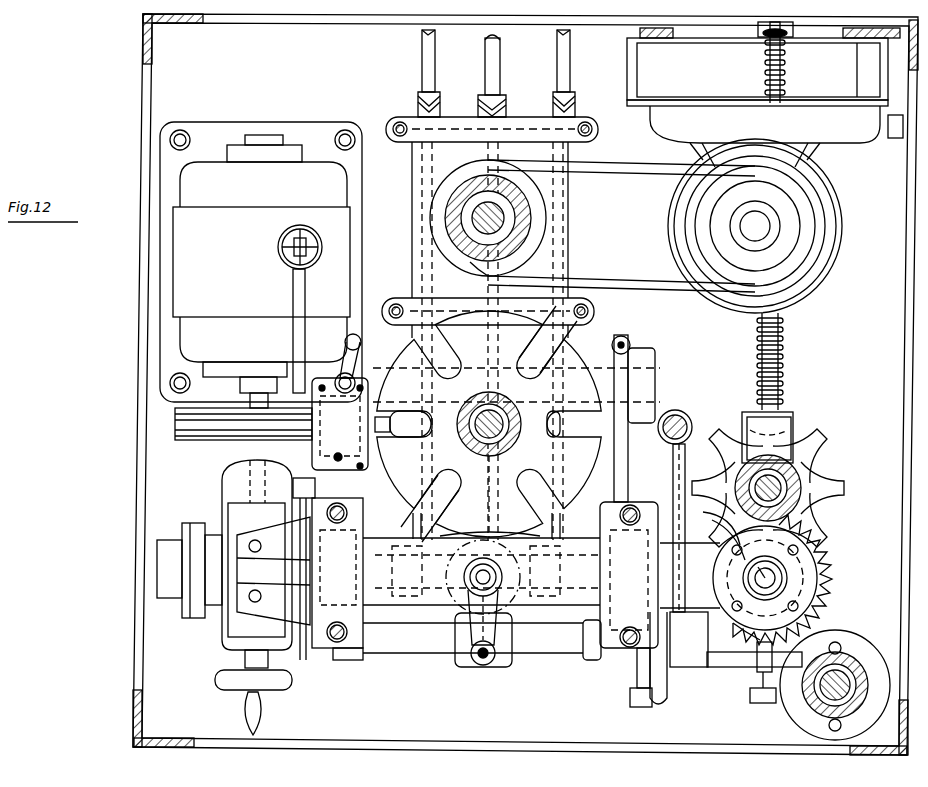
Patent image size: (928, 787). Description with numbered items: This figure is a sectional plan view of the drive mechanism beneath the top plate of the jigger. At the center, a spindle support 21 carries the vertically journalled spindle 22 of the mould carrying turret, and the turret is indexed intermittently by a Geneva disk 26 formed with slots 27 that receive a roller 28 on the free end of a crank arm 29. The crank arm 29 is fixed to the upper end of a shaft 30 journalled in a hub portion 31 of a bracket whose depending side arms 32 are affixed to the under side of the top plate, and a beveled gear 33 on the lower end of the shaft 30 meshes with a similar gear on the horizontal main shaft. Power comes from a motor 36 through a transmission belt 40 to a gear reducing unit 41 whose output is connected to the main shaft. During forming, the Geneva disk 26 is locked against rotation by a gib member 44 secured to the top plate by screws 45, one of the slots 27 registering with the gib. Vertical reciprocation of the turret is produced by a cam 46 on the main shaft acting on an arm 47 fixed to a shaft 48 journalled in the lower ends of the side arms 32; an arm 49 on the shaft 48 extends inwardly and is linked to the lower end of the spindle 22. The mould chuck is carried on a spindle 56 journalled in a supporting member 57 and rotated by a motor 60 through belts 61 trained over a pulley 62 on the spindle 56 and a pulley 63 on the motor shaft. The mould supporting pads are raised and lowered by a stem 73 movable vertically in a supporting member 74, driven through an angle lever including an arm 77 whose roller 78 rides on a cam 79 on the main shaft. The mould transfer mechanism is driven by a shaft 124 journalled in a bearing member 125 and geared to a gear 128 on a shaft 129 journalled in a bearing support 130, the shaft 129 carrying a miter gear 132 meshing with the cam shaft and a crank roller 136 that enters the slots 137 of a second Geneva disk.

The spindle support 21 is at (458, 431).
The spindle 22 is at (510, 431).
The Geneva disk 26 is at (489, 424).
The slots 27 is at (578, 437).
The roller 28 is at (462, 650).
The crank arm 29 is at (493, 664).
The shaft 30 is at (476, 578).
The hub portion 31 is at (458, 560).
The side arms 32 is at (331, 579).
The beveled gear 33 is at (485, 529).
The motor 36 is at (261, 265).
The transmission belt 40 is at (210, 438).
The gear reducing unit 41 is at (232, 482).
The gib member 44 is at (398, 434).
The screws 45 is at (333, 457).
The cam 46 is at (361, 342).
The arm 47 is at (662, 700).
The shaft 48 is at (583, 652).
The arm 49 is at (502, 497).
The spindle 56 is at (480, 170).
The supporting member 57 is at (474, 274).
The motor 60 is at (838, 226).
The belts 61 is at (640, 278).
The pulley 62 is at (428, 226).
The pulley 63 is at (805, 268).
The stem 73 is at (690, 420).
The supporting member 74 is at (688, 447).
The arm 77 is at (706, 668).
The roller 78 is at (689, 639).
The cam 79 is at (716, 536).
The shaft 124 is at (842, 665).
The bearing member 125 is at (805, 702).
The gear 128 is at (826, 562).
The shaft 129 is at (725, 532).
The bearing support 130 is at (812, 545).
The miter gear 132 is at (767, 388).
The roller 136 is at (795, 480).
The slots 137 is at (800, 440).